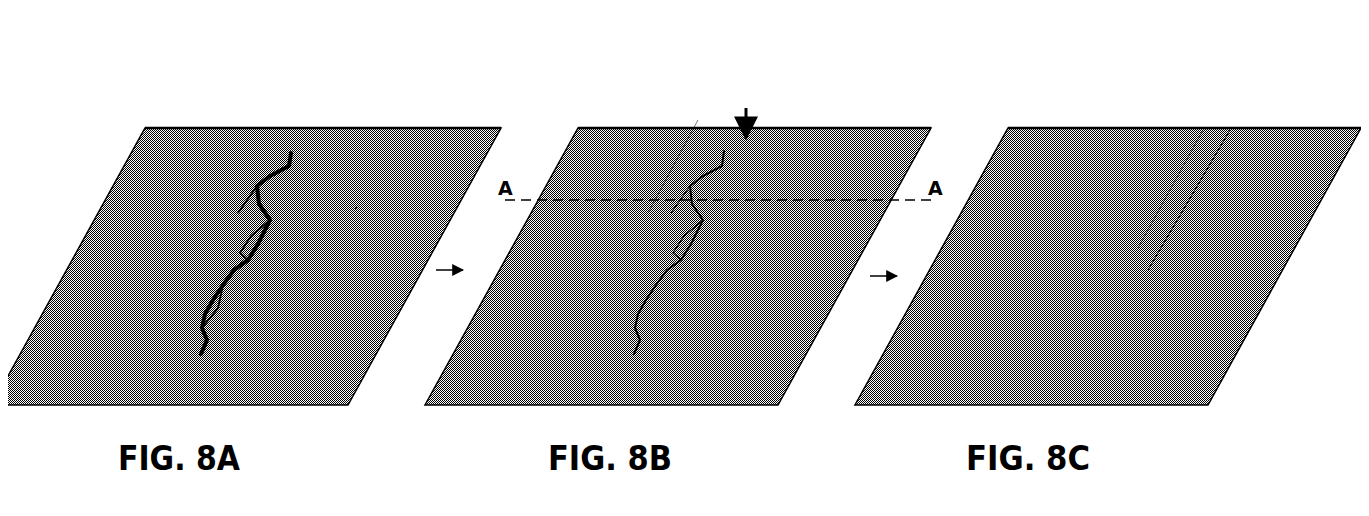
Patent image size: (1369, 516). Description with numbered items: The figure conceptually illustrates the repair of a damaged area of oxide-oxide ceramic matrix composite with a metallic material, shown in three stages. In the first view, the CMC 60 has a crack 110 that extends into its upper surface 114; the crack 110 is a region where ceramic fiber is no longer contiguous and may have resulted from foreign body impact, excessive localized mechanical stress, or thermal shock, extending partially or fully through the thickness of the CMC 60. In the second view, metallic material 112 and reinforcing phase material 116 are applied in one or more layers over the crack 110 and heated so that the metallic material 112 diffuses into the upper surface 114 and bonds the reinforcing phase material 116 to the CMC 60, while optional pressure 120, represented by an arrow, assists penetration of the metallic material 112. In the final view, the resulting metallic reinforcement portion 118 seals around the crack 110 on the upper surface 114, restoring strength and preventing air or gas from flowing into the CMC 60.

In FIG. 8A, the CMC 60 is at (428, 121).
In FIG. 8B, the CMC 60 is at (842, 121).
In FIG. 8C, the CMC 60 is at (1272, 121).
In FIG. 8A, the crack 110 is at (250, 138).
In FIG. 8A, the upper surface 114 is at (349, 199).
In FIG. 8B, the reinforcing phase material 116 is at (676, 150).
In FIG. 8B, the metallic material 112 is at (680, 112).
In FIG. 8B, the pressure 120 is at (750, 108).
In FIG. 8C, the metallic reinforcement portion 118 is at (1172, 130).